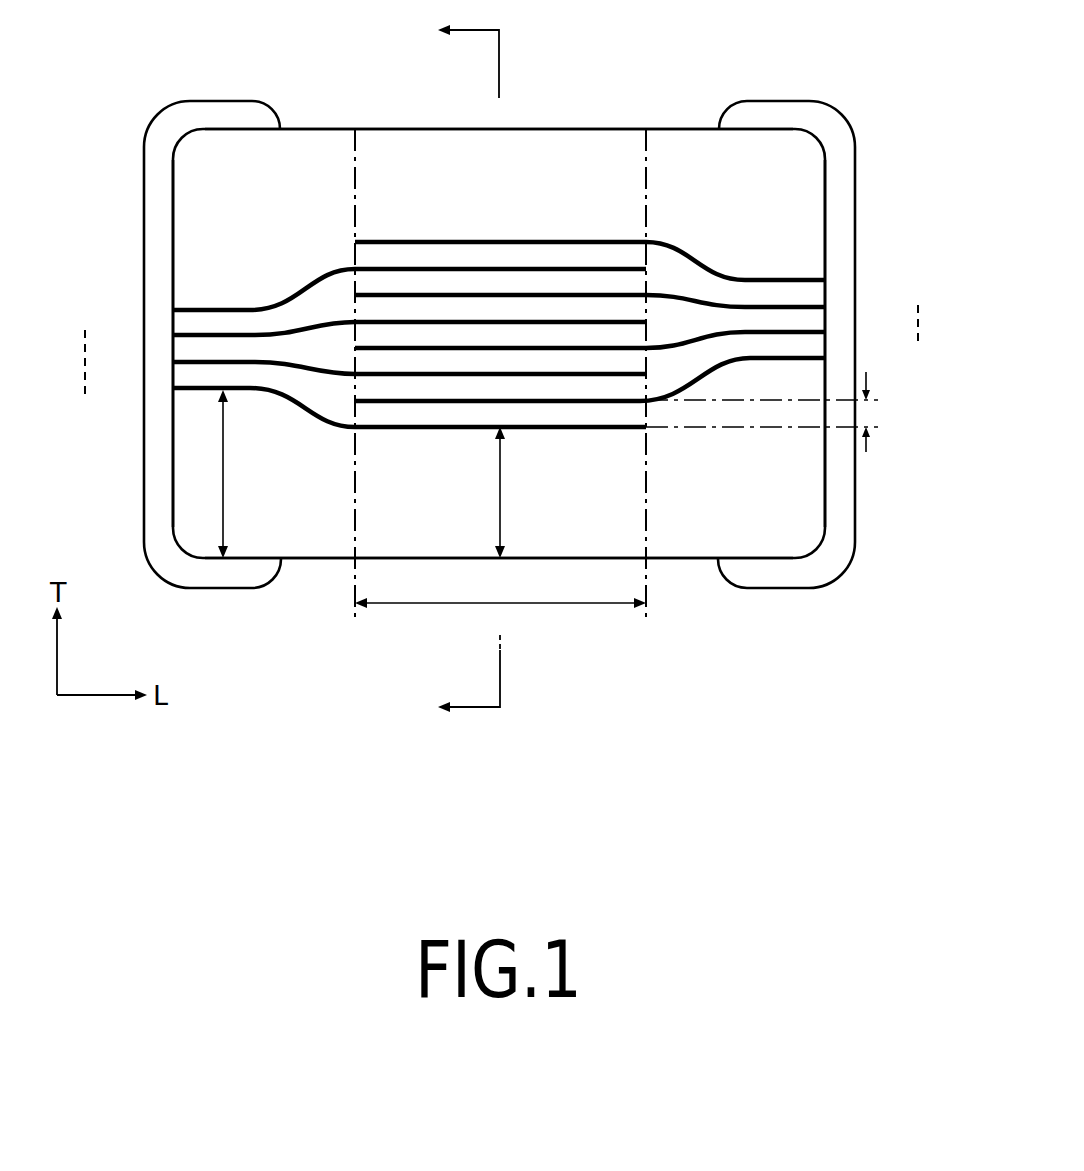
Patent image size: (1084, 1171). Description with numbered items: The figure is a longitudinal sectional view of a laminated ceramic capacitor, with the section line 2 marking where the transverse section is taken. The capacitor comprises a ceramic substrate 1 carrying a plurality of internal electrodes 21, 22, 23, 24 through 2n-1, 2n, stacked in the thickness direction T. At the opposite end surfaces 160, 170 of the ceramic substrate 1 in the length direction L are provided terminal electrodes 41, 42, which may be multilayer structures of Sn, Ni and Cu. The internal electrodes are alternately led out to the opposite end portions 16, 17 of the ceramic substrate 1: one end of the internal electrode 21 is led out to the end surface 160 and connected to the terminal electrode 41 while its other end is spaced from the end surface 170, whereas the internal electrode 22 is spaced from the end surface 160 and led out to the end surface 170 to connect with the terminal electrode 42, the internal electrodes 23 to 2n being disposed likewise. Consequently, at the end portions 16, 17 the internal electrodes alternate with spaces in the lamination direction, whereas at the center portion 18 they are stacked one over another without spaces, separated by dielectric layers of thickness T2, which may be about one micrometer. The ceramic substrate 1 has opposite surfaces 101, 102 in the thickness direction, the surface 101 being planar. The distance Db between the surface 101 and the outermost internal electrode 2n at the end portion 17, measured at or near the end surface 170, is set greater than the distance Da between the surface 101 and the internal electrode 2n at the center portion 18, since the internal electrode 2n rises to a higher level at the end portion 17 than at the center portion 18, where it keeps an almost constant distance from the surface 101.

The ceramic substrate 1 is at (427, 138).
The section line 2 is at (458, 367).
The end portion 16 is at (800, 455).
The end portion 17 is at (195, 474).
The center portion 18 is at (500, 623).
The internal electrode 21 is at (800, 280).
The internal electrode 22 is at (200, 307).
The internal electrode 23 is at (805, 307).
The internal electrode 24 is at (193, 336).
The internal electrode 2n is at (198, 390).
The internal electrode 2n-1 is at (800, 358).
The terminal electrode 41 is at (808, 118).
The terminal electrode 42 is at (192, 115).
The surface 101 is at (312, 560).
The surface 102 is at (313, 128).
The end surface 160 is at (825, 197).
The end surface 170 is at (173, 200).
The distance Da is at (505, 493).
The distance Db is at (227, 473).
The layer thickness T2 is at (866, 413).